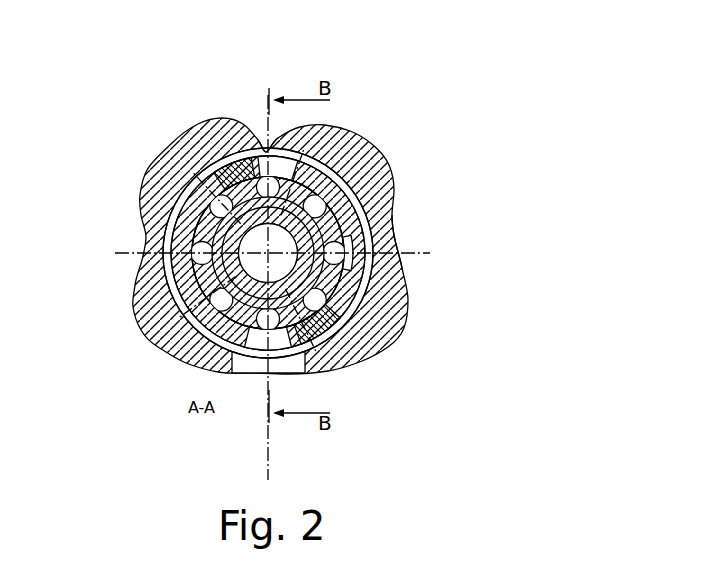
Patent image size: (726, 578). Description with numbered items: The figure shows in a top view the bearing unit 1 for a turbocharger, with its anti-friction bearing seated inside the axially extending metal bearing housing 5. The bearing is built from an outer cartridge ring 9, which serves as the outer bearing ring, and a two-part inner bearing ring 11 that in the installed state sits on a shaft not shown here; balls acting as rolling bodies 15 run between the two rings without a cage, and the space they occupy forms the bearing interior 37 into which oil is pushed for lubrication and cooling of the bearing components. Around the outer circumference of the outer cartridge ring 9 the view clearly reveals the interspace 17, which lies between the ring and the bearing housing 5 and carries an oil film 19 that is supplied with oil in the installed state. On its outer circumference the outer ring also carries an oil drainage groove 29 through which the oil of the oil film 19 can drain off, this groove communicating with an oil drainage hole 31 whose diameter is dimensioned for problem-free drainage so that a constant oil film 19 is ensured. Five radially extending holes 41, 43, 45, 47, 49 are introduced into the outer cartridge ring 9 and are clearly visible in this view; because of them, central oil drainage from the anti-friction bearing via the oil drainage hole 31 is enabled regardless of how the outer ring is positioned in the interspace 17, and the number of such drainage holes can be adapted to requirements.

The bearing unit 1 is at (474, 110).
The bearing housing 5 is at (392, 195).
The outer cartridge ring 9 is at (225, 160).
The inner bearing ring 11 is at (238, 345).
The rolling bodies 15 is at (363, 237).
The interspace 17 is at (263, 148).
The oil film 19 is at (269, 113).
The oil drainage groove 29 is at (338, 172).
The oil drainage hole 31 is at (262, 385).
The bearing interior 37 is at (195, 300).
The radially extending hole 41 is at (327, 165).
The radially extending hole 43 is at (356, 243).
The radially extending hole 45 is at (313, 333).
The radially extending hole 47 is at (182, 330).
The radially extending hole 49 is at (187, 222).